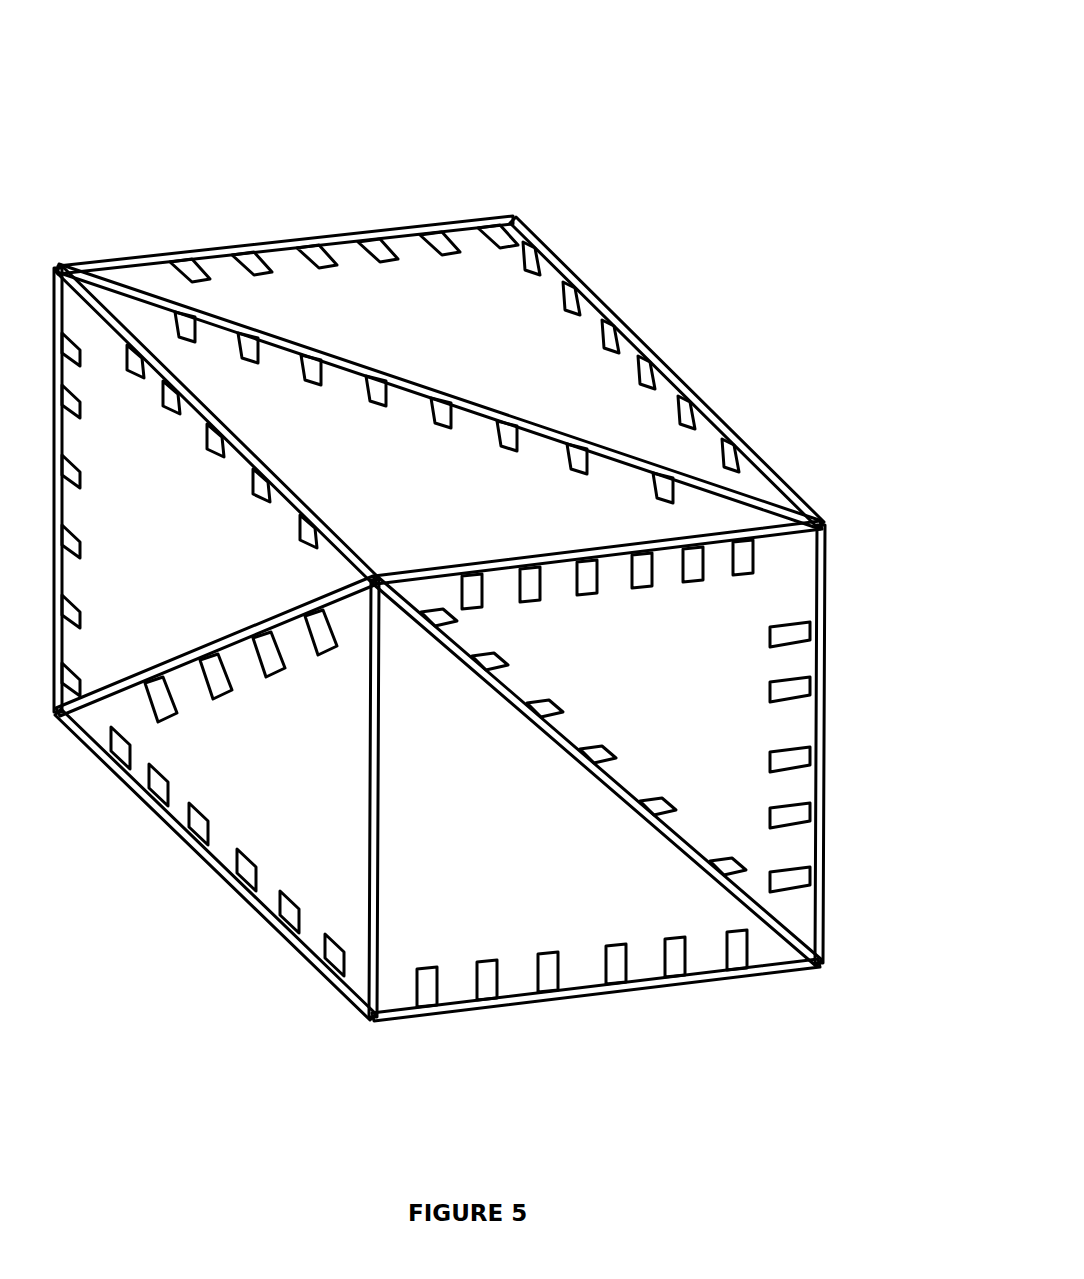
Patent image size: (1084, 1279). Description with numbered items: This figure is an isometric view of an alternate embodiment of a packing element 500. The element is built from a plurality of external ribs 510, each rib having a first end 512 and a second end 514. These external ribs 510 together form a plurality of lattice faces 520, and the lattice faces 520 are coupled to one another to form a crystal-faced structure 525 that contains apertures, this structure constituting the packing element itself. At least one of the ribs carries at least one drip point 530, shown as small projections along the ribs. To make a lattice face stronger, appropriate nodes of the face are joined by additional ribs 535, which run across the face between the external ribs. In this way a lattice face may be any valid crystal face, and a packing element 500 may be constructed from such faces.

The packing element 500 is at (703, 72).
The external ribs 510 is at (603, 443).
The first end 512 is at (518, 214).
The second end 514 is at (823, 523).
The lattice faces 520 is at (418, 914).
The crystal-faced structure 525 is at (828, 882).
The drip points 530 is at (757, 560).
The additional ribs 535 is at (730, 895).